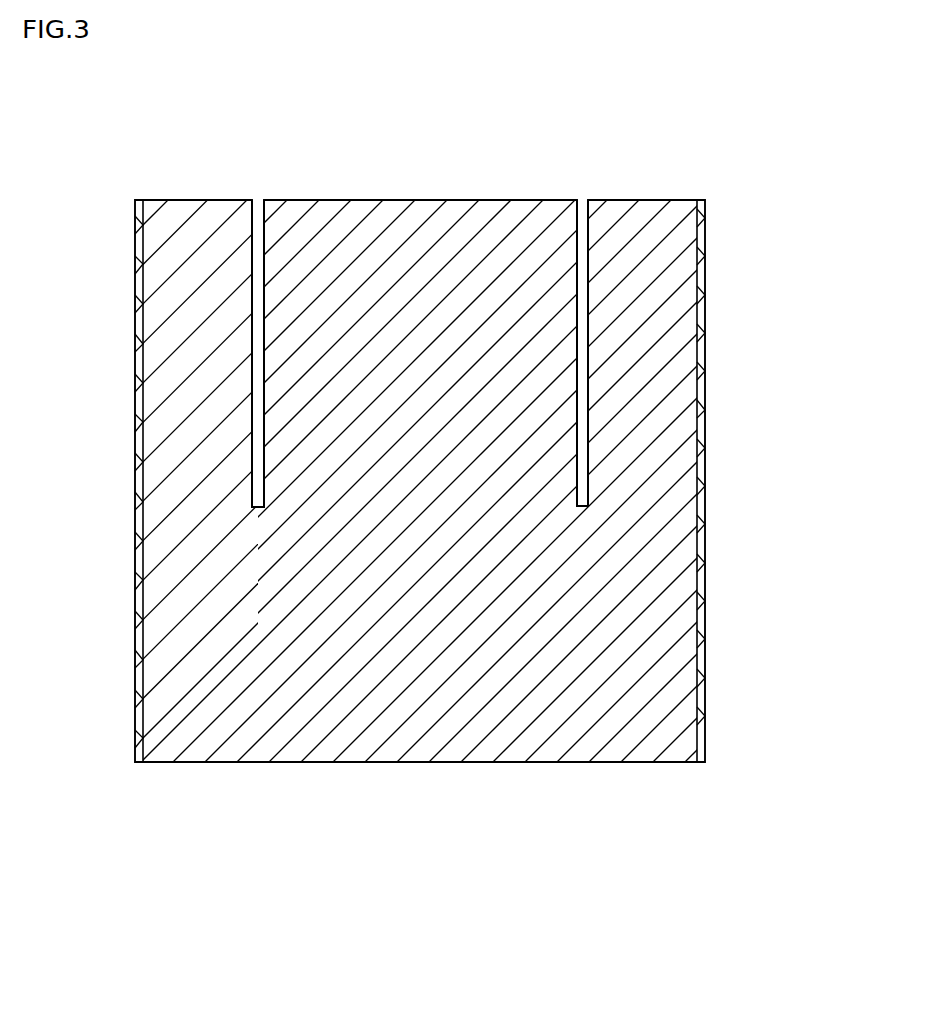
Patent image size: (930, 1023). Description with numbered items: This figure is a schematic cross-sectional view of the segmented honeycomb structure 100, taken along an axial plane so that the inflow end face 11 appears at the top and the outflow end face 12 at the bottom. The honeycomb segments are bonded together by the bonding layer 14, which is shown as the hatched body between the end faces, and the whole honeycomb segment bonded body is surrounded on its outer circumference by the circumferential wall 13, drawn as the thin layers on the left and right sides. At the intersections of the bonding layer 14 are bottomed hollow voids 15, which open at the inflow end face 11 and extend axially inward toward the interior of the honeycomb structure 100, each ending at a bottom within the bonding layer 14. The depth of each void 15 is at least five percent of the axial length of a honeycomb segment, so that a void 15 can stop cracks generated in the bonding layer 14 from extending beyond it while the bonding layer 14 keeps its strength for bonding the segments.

The honeycomb structure 100 is at (743, 114).
The inflow end face 11 is at (183, 162).
The outflow end face 12 is at (190, 783).
The circumferential wall 13 is at (707, 412).
The bonding layer 14 is at (352, 298).
The void 15 is at (260, 272).